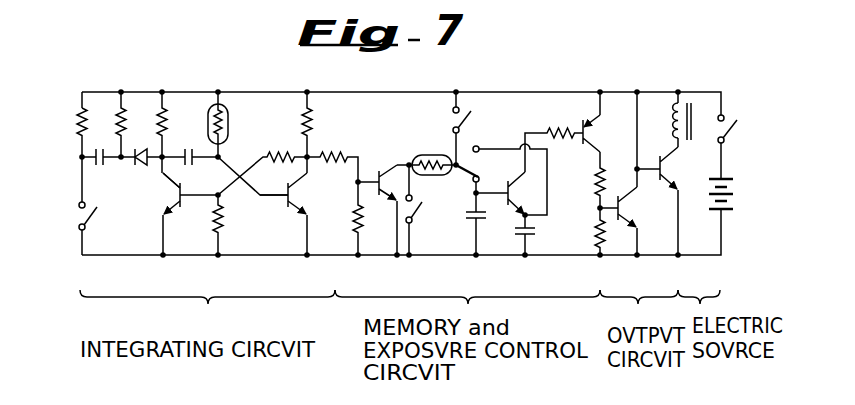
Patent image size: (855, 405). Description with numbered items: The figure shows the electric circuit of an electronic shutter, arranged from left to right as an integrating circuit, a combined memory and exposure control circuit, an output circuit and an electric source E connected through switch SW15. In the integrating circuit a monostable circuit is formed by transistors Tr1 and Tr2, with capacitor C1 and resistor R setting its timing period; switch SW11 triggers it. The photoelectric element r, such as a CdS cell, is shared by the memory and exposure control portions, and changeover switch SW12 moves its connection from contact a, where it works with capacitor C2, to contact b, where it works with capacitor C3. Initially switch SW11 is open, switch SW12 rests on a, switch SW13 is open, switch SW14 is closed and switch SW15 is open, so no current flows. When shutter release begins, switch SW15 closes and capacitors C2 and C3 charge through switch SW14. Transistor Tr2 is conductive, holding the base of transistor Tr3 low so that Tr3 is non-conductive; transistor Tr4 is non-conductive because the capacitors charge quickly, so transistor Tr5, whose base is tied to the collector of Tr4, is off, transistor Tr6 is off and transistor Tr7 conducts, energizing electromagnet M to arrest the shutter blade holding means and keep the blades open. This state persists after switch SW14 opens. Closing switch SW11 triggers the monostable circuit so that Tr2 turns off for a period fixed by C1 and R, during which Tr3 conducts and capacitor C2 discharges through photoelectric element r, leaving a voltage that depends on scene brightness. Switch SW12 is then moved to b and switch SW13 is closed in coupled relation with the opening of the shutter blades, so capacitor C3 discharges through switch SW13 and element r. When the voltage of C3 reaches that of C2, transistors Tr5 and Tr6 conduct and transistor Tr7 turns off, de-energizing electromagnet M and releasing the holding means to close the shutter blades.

The switch SW11 is at (107, 221).
The capacitor C1 is at (183, 142).
The resistor R is at (224, 124).
The transistor Tr1 is at (190, 206).
The transistor Tr2 is at (283, 208).
The transistor Tr3 is at (382, 207).
The photoelectric element r is at (432, 154).
The switch SW14 is at (439, 118).
The switch contact b is at (473, 140).
The switch contact a is at (467, 179).
The switch SW12 is at (431, 199).
The switch SW13 is at (431, 225).
The transistor Tr4 is at (506, 185).
The capacitor C2 is at (487, 225).
The capacitor C3 is at (537, 239).
The transistor Tr5 is at (580, 126).
The transistor Tr6 is at (622, 219).
The transistor Tr7 is at (660, 179).
The electromagnet M is at (691, 121).
The switch SW15 is at (744, 120).
The electric source E is at (727, 195).